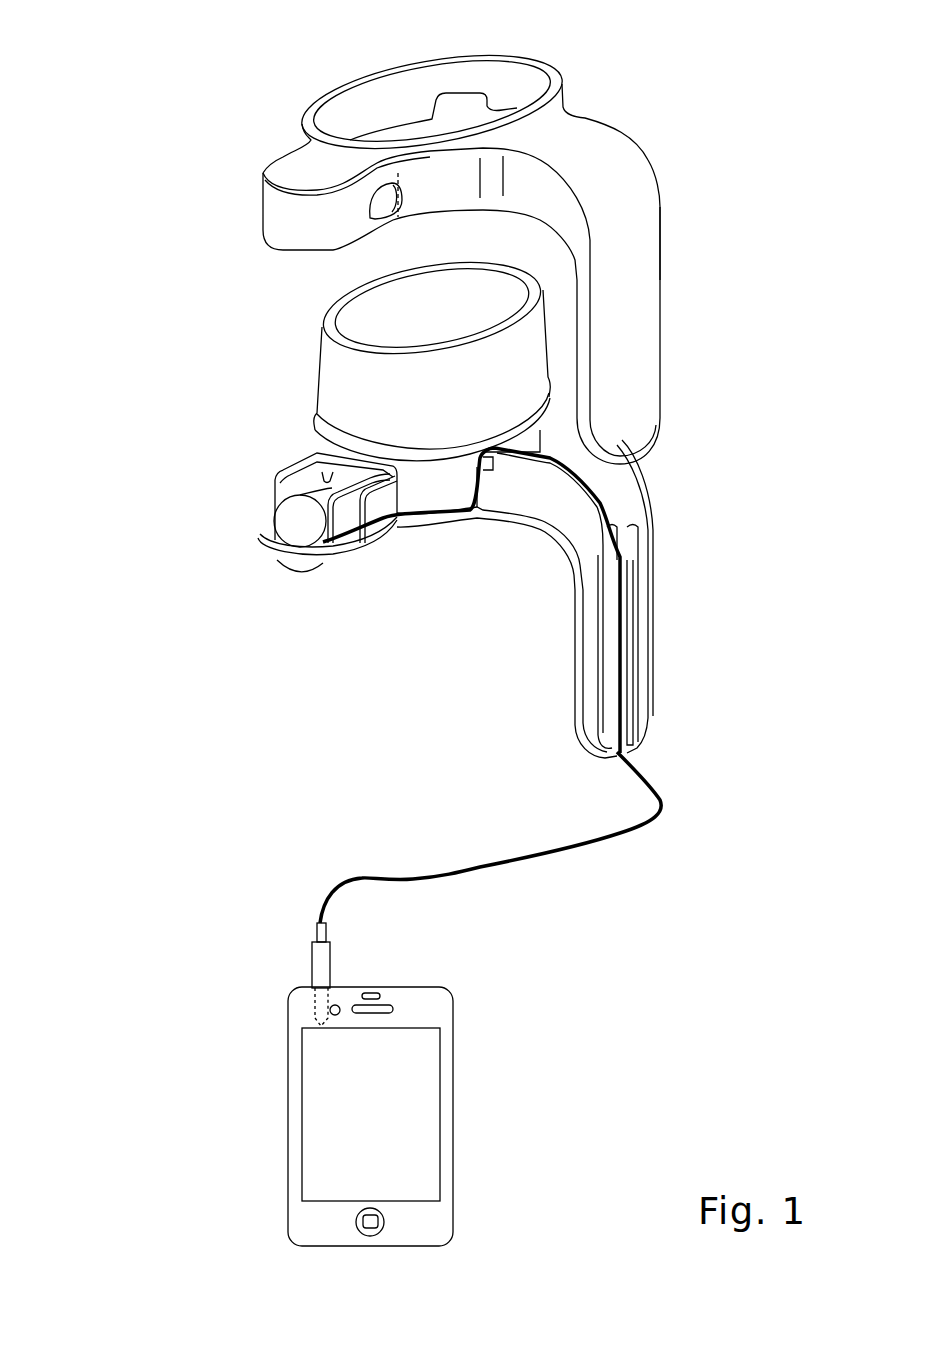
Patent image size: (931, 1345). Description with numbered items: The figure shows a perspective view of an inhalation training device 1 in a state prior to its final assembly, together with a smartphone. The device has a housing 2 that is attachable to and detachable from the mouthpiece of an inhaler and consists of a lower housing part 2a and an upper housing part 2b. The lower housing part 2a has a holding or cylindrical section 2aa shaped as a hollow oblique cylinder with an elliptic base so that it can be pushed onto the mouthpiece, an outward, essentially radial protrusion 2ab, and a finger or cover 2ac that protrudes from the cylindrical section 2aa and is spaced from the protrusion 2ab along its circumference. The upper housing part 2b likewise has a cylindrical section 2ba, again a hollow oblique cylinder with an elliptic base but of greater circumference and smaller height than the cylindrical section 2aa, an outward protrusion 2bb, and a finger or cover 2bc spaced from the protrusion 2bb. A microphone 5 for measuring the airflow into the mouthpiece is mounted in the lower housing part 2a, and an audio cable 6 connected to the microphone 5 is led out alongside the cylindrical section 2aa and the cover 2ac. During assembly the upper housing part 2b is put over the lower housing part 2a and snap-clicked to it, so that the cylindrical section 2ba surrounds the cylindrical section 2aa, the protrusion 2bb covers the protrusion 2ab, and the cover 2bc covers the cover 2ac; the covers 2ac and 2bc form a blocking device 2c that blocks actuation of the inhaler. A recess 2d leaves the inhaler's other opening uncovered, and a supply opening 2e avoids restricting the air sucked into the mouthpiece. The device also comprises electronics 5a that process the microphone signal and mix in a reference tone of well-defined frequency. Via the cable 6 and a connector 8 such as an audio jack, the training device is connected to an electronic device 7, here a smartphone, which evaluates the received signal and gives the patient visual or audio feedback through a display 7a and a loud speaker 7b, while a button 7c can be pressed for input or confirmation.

The inhalation training device 1 is at (463, 379).
The housing 2 is at (273, 332).
The lower housing part 2a is at (232, 616).
The cylindrical section 2aa is at (338, 383).
The protrusion 2ab is at (343, 525).
The finger or cover 2ac is at (655, 527).
The upper housing part 2b is at (708, 152).
The cylindrical section 2ba is at (388, 82).
The protrusion 2bb is at (300, 163).
The finger or cover 2bc is at (640, 324).
The blocking device 2c is at (670, 657).
The recess 2d is at (517, 108).
The supply opening 2e is at (378, 209).
The microphone 5 is at (292, 528).
The electronics 5a is at (303, 530).
The audio cable 6 is at (500, 863).
The electronic device 7 is at (470, 1063).
The display 7a is at (410, 1128).
The loud speaker 7b is at (380, 990).
The button 7c is at (377, 1223).
The connector 8 is at (325, 947).